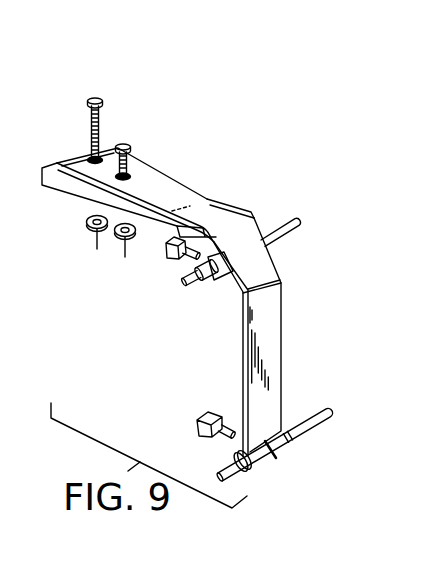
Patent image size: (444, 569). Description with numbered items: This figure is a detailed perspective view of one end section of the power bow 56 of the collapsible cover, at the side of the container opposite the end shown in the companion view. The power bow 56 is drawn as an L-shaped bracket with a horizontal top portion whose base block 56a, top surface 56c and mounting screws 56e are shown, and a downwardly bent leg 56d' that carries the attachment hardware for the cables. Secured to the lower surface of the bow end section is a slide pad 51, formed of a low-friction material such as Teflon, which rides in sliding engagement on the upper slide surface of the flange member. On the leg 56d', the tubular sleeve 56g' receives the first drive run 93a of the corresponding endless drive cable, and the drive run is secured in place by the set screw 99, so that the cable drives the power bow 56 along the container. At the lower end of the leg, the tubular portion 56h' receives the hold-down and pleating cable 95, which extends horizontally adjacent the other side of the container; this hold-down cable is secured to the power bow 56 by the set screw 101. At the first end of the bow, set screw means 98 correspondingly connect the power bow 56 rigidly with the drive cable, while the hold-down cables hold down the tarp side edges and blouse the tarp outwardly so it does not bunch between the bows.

The power bow 56 is at (61, 149).
The bracket base block 56a is at (59, 181).
The bracket top surface 56c is at (160, 189).
The mounting screws 56e is at (101, 99).
The slide pad 51 is at (194, 228).
The bracket leg 56d' is at (228, 337).
The tubular sleeve 56g' is at (190, 295).
The tubular portion 56h' is at (297, 472).
The first drive run 93a is at (274, 238).
The hold-down and pleating cable 95 is at (317, 426).
The set screw means 98 is at (12, 325).
The set screw 99 is at (165, 252).
The set screw 101 is at (198, 423).